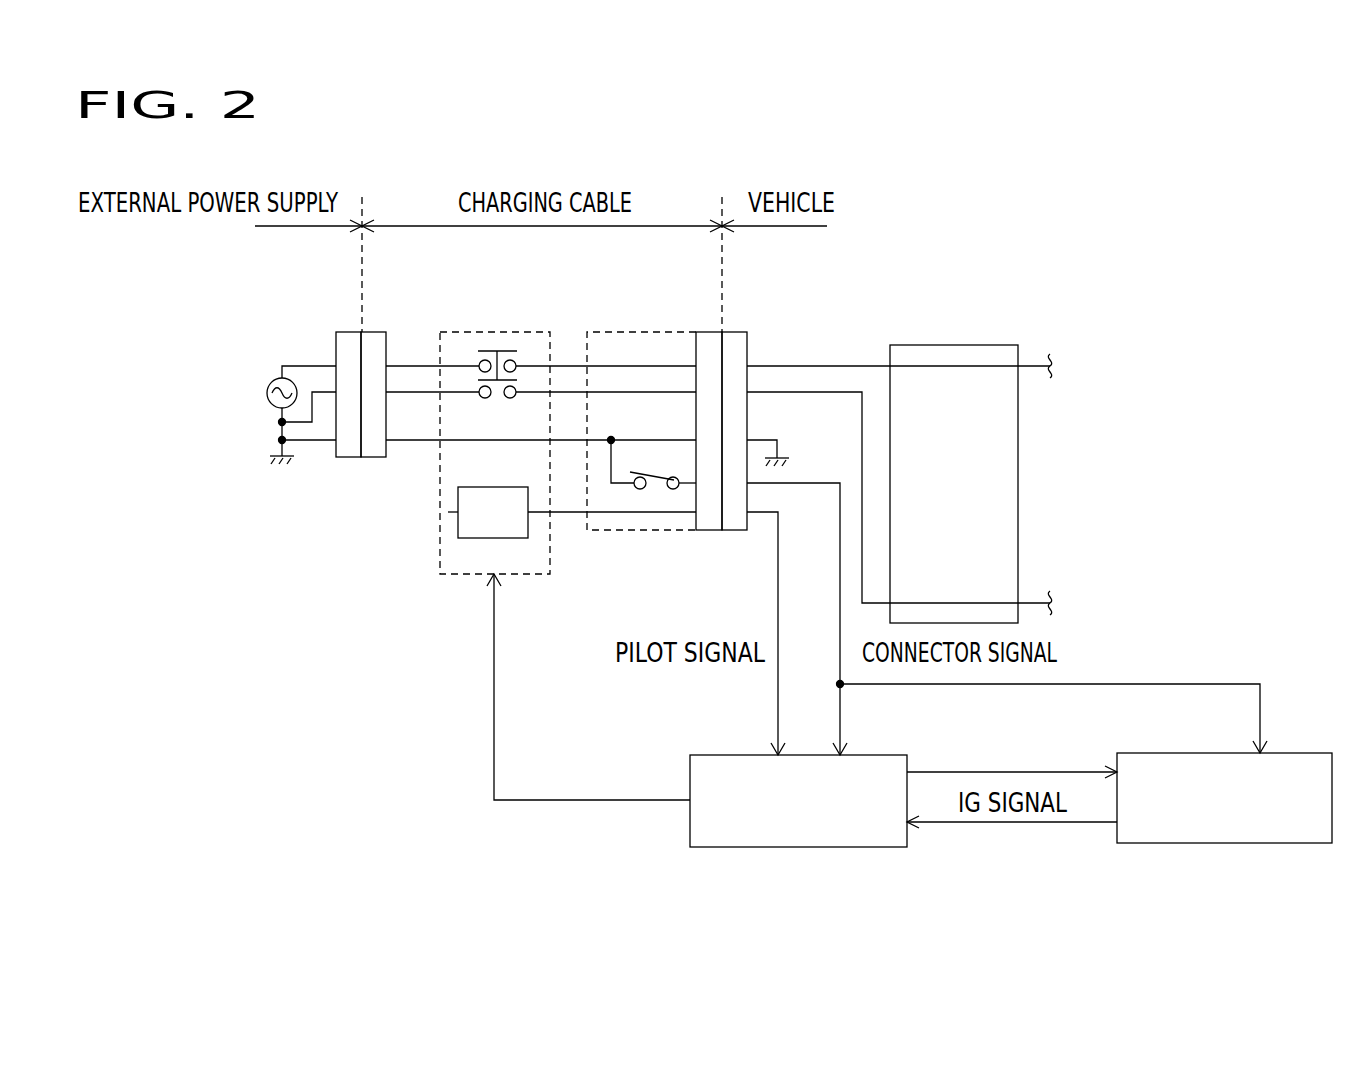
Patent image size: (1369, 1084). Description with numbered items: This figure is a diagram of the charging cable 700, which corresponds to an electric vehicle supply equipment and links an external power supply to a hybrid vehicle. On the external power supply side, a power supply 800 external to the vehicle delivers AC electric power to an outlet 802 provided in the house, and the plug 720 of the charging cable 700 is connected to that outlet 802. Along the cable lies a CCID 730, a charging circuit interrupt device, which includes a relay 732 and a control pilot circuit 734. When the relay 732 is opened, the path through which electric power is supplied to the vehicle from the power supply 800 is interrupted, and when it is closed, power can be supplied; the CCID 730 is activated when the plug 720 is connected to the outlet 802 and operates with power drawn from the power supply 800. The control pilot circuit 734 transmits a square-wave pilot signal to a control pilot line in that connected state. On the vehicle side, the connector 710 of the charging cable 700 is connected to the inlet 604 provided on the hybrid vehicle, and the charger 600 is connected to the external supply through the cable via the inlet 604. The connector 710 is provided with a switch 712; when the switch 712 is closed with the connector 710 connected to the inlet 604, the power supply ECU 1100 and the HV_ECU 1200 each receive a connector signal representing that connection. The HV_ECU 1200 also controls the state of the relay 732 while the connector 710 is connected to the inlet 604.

The charger 600 is at (975, 345).
The inlet 604 is at (732, 332).
The charging cable 700 is at (588, 318).
The connector 710 is at (710, 332).
The switch 712 is at (658, 497).
The plug 720 is at (372, 332).
The CCID (charging circuit interrupt device) 730 is at (448, 575).
The relay 732 is at (527, 350).
The control pilot circuit 734 is at (450, 512).
The power supply 800 is at (282, 366).
The outlet 802 is at (352, 457).
The power supply ECU 1100 is at (1242, 845).
The HV_ECU 1200 is at (800, 848).